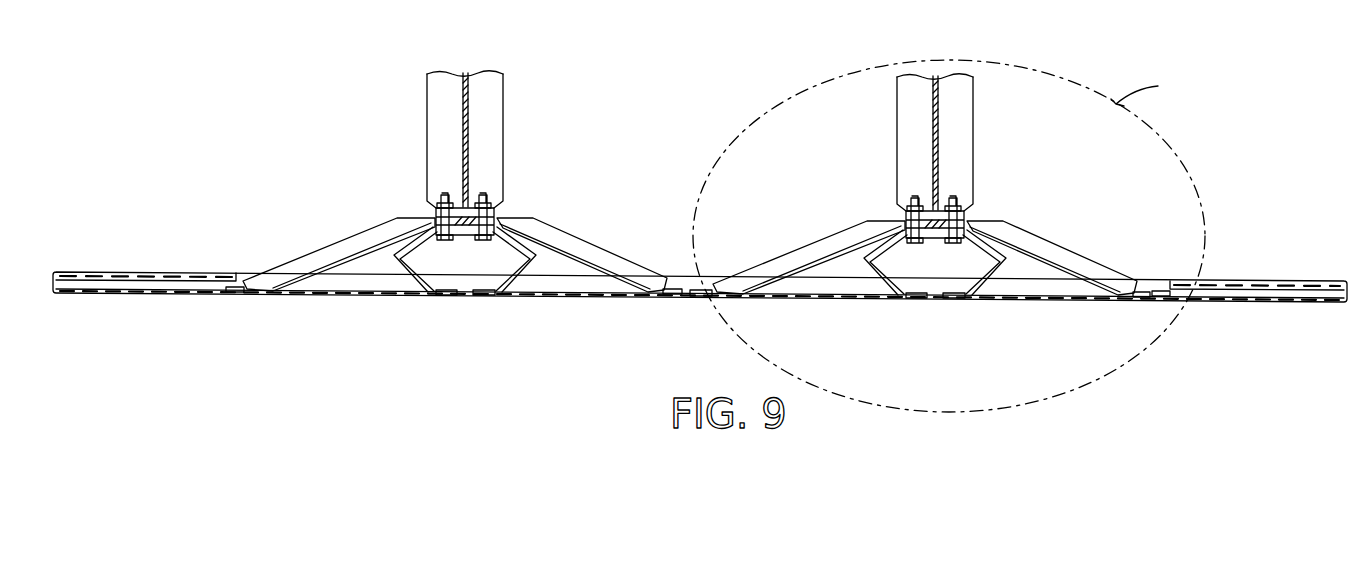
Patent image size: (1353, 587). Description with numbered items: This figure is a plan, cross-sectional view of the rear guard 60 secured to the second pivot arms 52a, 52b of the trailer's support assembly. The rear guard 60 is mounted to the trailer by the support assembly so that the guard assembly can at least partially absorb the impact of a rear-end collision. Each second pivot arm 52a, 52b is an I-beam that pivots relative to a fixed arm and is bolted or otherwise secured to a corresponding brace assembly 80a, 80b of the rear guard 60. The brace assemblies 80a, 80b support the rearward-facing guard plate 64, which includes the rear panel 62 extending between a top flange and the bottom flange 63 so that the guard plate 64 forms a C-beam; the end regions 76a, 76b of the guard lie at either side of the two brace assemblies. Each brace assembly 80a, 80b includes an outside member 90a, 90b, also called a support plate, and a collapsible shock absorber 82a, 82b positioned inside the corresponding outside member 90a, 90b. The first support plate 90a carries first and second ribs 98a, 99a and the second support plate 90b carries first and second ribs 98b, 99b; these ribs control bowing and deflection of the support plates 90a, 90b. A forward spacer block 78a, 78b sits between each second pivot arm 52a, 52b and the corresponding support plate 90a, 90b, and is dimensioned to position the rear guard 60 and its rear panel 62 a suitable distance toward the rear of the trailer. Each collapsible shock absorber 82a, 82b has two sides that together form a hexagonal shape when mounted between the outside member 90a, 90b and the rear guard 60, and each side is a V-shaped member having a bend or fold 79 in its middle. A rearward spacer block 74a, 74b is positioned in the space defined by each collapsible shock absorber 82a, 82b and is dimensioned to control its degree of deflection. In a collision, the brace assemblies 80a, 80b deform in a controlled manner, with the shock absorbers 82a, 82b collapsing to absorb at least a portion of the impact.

The second pivot arm 52a is at (964, 142).
The second pivot arm 52b is at (492, 133).
The rear guard 60 is at (1100, 68).
The rear panel 62 is at (617, 300).
The bottom flange 63 is at (325, 297).
The guard plate 64 is at (1112, 300).
The rearward spacer block 74a is at (946, 291).
The rearward spacer block 74b is at (463, 240).
The end plate 76a is at (1253, 282).
The end plate 76b is at (92, 296).
The forward spacer block 78a is at (958, 195).
The forward spacer block 78b is at (460, 207).
The bend or fold 79 is at (393, 260).
The first brace assembly 80a is at (921, 340).
The second brace assembly 80b is at (445, 300).
The first collapsible shock absorber 82a is at (1049, 240).
The second collapsible shock absorber 82b is at (538, 252).
The first outside member 90a is at (822, 281).
The second outside member 90b is at (345, 258).
The first rib 98a is at (1052, 254).
The first rib 98b is at (615, 260).
The second rib 99a is at (809, 256).
The second rib 99b is at (332, 250).